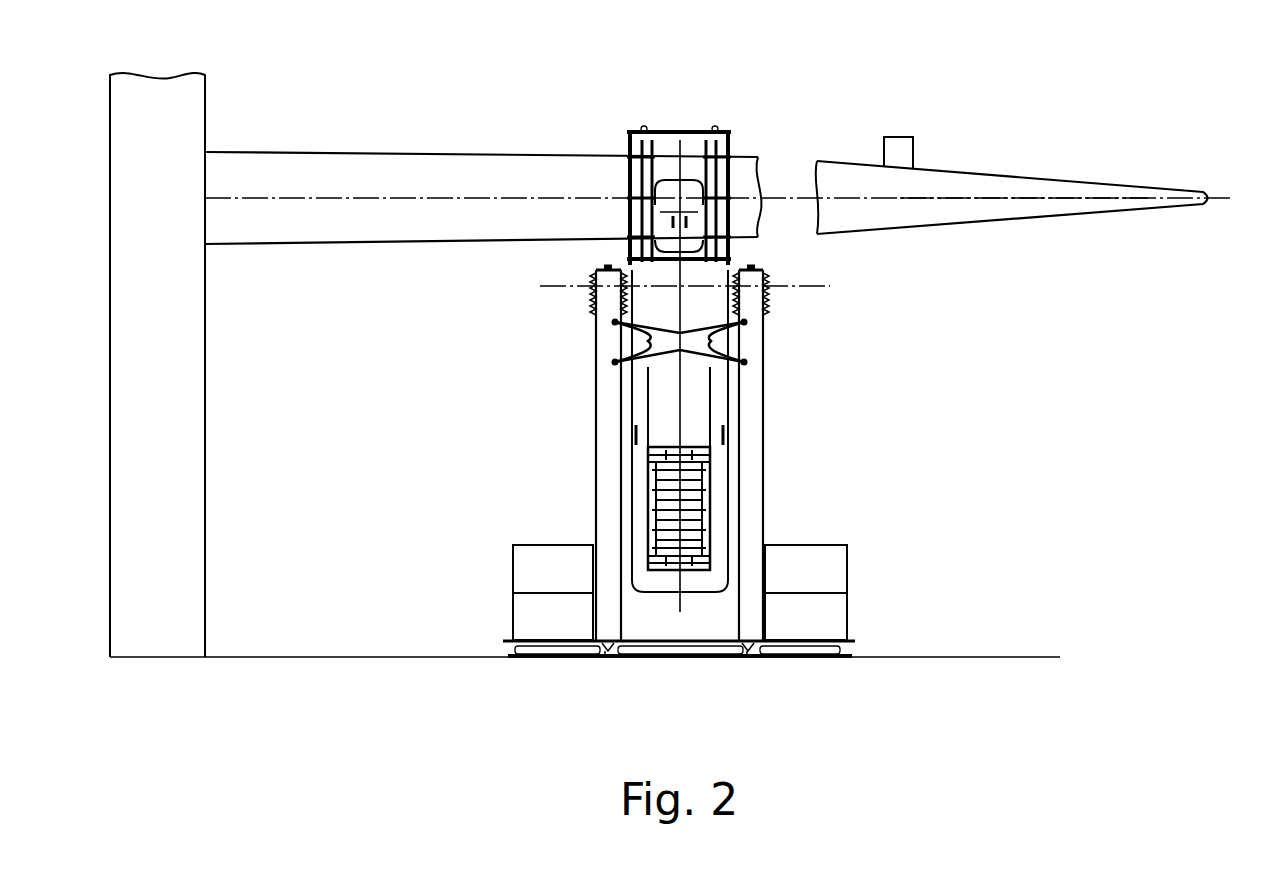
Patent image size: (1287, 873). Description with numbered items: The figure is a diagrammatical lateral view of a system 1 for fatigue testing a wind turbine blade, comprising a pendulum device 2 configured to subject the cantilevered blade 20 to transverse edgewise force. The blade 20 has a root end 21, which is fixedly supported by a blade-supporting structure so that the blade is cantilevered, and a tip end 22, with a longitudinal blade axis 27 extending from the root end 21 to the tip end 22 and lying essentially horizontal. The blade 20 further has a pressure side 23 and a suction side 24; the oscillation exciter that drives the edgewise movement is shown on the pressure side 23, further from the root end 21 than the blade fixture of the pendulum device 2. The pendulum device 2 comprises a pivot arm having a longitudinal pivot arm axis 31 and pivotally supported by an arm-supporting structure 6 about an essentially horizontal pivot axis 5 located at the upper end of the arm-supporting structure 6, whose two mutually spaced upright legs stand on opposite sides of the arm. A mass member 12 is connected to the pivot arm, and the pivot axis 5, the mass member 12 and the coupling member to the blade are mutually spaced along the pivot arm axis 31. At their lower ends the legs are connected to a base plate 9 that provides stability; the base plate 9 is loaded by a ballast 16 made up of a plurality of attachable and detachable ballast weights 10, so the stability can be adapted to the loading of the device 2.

The arrangement 1 is at (392, 92).
The pendulum device 2 is at (580, 407).
The pivot axis 5 is at (790, 294).
The arm-supporting structure 6 is at (752, 424).
The base plate 9 is at (838, 652).
The ballast weights 10 is at (530, 567).
The mass member 12 is at (705, 488).
The ballast 16 is at (838, 566).
The wind turbine blade 20 is at (465, 142).
The root end 21 is at (277, 165).
The tip end 22 is at (1152, 196).
The pressure side 23 is at (345, 148).
The suction side 24 is at (322, 247).
The longitudinal blade axis 27 is at (1022, 200).
The longitudinal pivot arm axis 31 is at (690, 610).